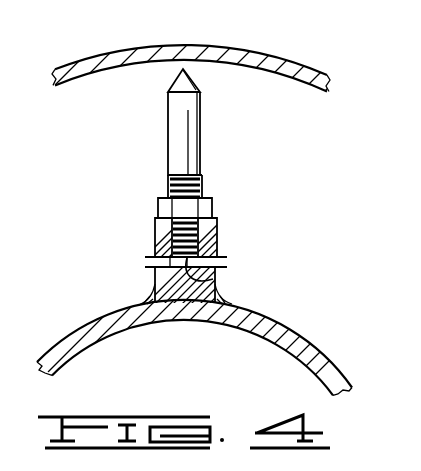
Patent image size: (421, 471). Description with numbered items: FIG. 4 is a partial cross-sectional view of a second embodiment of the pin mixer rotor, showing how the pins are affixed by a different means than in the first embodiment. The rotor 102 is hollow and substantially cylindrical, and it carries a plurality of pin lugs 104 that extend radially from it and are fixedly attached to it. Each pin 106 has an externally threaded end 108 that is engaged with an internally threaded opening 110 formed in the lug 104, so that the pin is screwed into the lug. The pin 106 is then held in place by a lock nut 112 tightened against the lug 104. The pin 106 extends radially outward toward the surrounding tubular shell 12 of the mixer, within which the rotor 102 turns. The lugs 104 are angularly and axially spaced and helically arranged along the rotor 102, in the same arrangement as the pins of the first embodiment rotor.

The tubular shell 12 is at (280, 63).
The rotor 102 is at (298, 318).
The pin lug 104 is at (215, 223).
The pin 106 is at (185, 123).
The externally threaded end 108 is at (155, 250).
The internally threaded opening 110 is at (213, 279).
The lock nut 112 is at (165, 205).